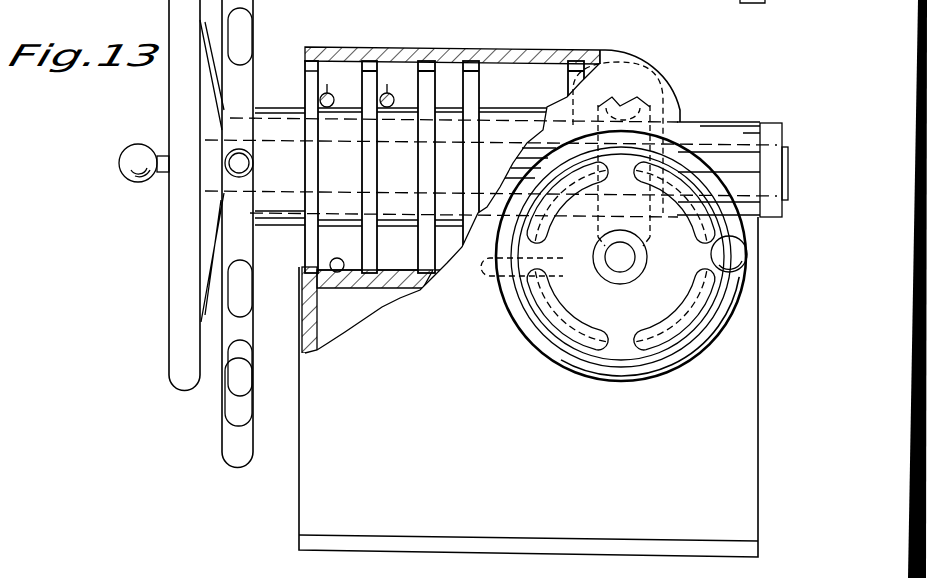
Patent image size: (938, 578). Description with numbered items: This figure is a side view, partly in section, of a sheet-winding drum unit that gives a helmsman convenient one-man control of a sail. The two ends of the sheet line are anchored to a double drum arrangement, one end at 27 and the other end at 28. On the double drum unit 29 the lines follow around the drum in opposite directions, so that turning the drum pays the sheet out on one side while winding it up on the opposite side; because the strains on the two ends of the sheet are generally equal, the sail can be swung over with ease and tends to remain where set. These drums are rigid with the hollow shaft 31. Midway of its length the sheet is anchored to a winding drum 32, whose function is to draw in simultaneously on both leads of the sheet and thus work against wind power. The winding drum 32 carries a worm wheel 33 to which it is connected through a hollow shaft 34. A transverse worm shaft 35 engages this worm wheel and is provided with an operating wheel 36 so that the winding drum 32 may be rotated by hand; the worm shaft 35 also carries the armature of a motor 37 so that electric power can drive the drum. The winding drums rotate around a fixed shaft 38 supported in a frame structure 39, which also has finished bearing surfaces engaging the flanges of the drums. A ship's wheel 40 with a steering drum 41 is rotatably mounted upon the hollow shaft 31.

The sheet line end anchor 27 is at (320, 96).
The sheet line end anchor 28 is at (373, 61).
The double drum unit 29 is at (302, 233).
The hollow shaft 31 is at (233, 113).
The winding drum 32 is at (566, 116).
The worm wheel 33 is at (668, 63).
The hollow shaft 34 is at (660, 70).
The transverse worm shaft 35 is at (604, 257).
The operating wheel 36 is at (563, 364).
The motor 37 is at (545, 322).
The fixed shaft 38 is at (407, 196).
The frame structure 39 is at (688, 120).
The ship's wheel 40 is at (221, 436).
The steering drum 41 is at (288, 157).